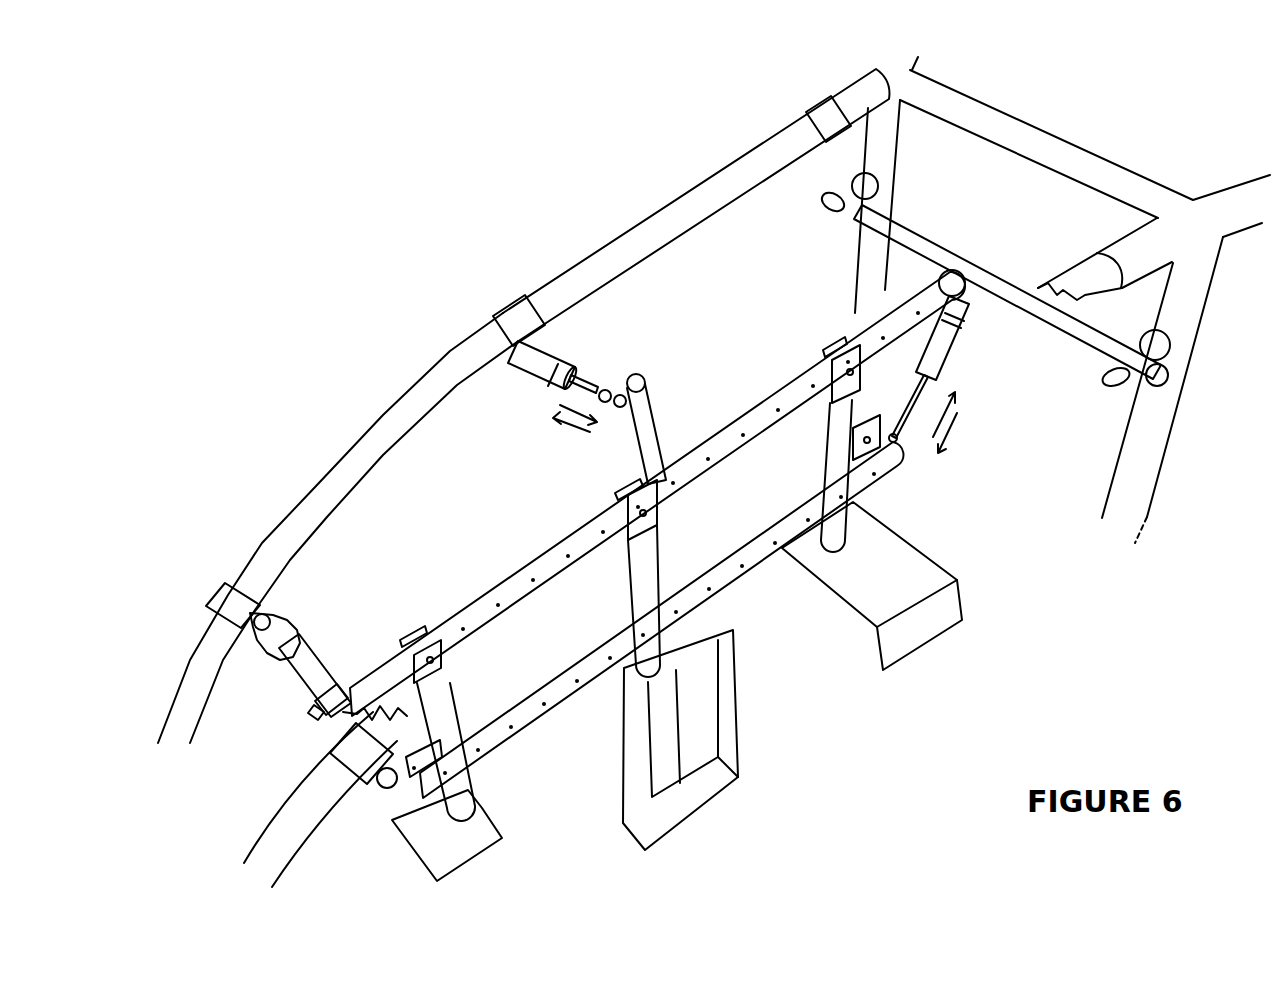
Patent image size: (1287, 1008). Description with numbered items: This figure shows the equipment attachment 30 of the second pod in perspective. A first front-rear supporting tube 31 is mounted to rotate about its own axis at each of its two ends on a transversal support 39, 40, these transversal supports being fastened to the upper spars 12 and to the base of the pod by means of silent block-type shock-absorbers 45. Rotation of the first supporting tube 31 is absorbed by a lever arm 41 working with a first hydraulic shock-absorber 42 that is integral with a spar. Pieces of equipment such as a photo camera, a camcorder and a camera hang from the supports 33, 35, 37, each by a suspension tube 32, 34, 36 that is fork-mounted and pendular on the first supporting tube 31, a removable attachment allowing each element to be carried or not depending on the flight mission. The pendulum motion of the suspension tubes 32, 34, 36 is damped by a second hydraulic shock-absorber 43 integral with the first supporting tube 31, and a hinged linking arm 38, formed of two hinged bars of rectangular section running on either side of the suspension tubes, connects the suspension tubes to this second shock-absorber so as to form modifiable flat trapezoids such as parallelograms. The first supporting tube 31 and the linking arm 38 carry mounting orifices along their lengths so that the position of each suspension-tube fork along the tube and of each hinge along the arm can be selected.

The upper spar 12 is at (684, 200).
The rack assembly 30 is at (743, 360).
The first front-rear supporting tube 31 is at (580, 537).
The suspension tube 32 is at (840, 523).
The support 33 is at (900, 647).
The suspension tube 34 is at (633, 573).
The support 35 is at (660, 752).
The suspension tube 36 is at (440, 683).
The support 37 is at (467, 850).
The linking arm 38 is at (603, 673).
The transversal support 39 is at (1090, 343).
The transversal support 40 is at (302, 670).
The lever arm 41 is at (667, 447).
The first hydraulic shock-absorber 42 is at (537, 374).
The second hydraulic shock-absorber 43 is at (940, 357).
The silent block-type shock-absorber 45 is at (847, 183).